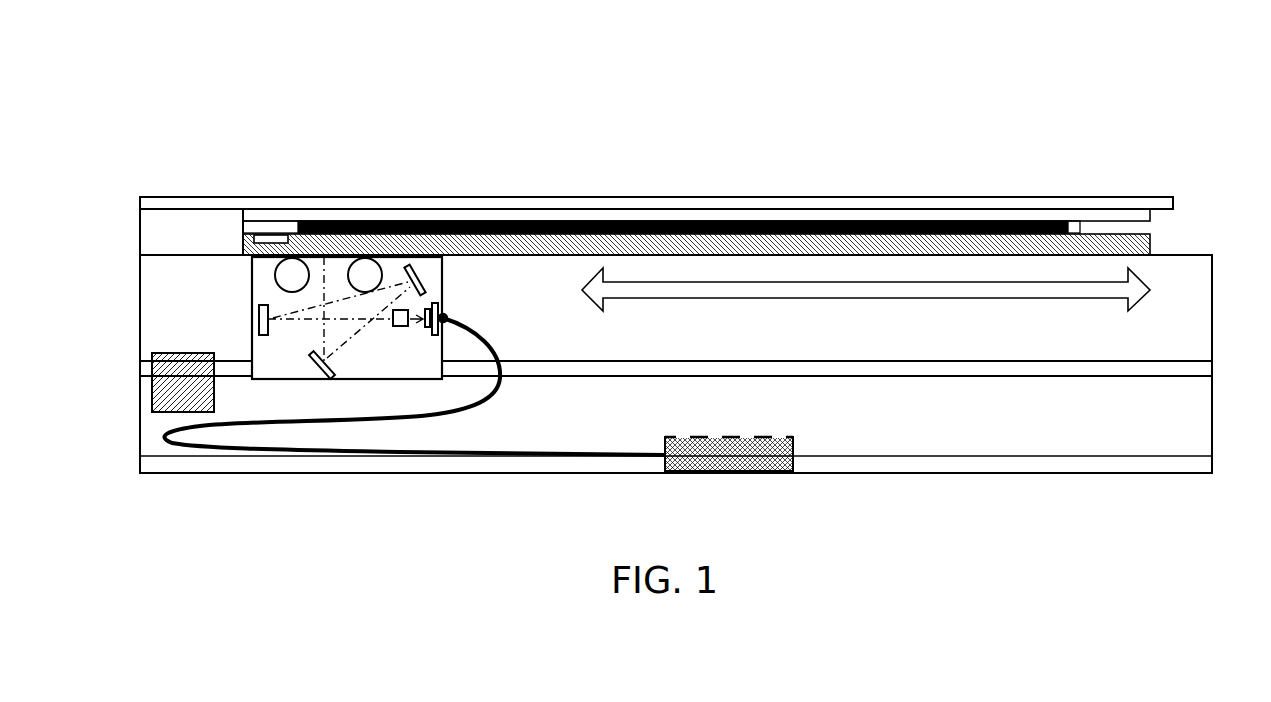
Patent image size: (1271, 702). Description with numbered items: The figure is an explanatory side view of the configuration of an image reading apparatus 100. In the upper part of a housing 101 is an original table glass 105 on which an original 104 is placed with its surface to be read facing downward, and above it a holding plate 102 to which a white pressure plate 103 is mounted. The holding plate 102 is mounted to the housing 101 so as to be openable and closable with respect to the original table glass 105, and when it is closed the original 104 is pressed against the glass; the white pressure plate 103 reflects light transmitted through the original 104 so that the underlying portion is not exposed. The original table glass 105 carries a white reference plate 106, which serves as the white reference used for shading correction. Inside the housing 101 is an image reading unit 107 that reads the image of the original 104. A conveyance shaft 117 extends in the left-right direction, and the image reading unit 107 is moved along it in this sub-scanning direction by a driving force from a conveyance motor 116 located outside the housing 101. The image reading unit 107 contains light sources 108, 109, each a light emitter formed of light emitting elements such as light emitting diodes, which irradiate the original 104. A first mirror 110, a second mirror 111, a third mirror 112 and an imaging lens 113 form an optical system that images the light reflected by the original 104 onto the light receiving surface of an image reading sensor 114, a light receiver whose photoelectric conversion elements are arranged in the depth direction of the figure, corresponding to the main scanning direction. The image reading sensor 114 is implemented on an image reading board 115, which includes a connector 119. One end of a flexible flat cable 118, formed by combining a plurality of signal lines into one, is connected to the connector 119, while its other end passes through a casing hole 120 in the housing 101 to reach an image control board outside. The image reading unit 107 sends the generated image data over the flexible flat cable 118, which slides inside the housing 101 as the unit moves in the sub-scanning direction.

The image reading apparatus 100 is at (396, 98).
The housing 101 is at (142, 286).
The holding plate 102 is at (818, 197).
The white pressure plate 103 is at (1137, 209).
The original 104 is at (927, 220).
The original table glass 105 is at (1077, 234).
The white reference plate 106 is at (272, 234).
The image reading unit 107 is at (252, 340).
The light source 108 is at (367, 247).
The light source 109 is at (275, 277).
The first mirror 110 is at (315, 362).
The second mirror 111 is at (425, 272).
The third mirror 112 is at (259, 320).
The imaging lens 113 is at (397, 330).
The image reading sensor 114 is at (427, 330).
The image reading board 115 is at (440, 303).
The conveyance motor 116 is at (152, 392).
The conveyance shaft 117 is at (953, 361).
The flexible flat cable 118 is at (490, 400).
The connector 119 is at (447, 318).
The casing hole 120 is at (793, 440).